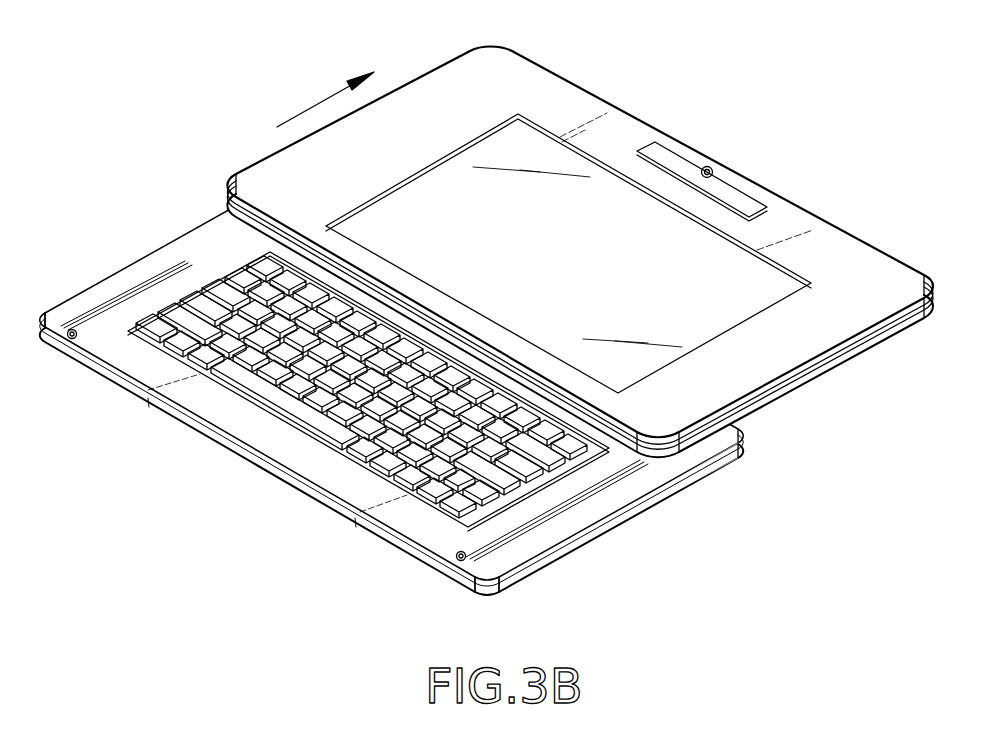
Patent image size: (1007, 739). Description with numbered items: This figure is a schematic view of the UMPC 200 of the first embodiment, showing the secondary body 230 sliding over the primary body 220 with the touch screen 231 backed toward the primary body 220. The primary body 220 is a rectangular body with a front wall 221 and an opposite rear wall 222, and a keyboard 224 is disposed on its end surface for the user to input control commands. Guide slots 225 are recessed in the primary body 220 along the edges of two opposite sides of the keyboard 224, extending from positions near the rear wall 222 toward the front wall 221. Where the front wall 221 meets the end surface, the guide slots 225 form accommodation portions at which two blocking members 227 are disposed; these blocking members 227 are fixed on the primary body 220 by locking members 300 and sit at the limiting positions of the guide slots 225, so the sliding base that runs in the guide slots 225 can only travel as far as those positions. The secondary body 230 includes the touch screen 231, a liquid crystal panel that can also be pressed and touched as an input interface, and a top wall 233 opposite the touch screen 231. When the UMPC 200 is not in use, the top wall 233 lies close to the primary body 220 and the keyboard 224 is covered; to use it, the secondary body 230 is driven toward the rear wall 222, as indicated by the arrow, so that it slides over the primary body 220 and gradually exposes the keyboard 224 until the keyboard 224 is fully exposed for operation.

The UMPC 200 is at (920, 53).
The primary body 220 is at (668, 512).
The front wall 221 is at (250, 457).
The rear wall 222 is at (747, 440).
The keyboard 224 is at (513, 480).
The guide slots 225 is at (180, 257).
The blocking members 227 is at (50, 348).
The secondary body 230 is at (613, 100).
The touch screen 231 is at (828, 250).
The top wall 233 is at (832, 378).
The locking members 300 is at (72, 328).